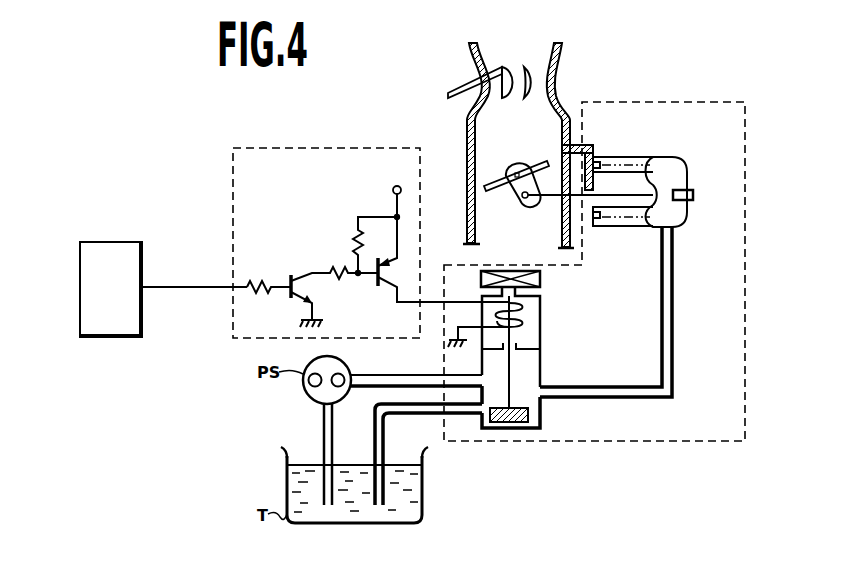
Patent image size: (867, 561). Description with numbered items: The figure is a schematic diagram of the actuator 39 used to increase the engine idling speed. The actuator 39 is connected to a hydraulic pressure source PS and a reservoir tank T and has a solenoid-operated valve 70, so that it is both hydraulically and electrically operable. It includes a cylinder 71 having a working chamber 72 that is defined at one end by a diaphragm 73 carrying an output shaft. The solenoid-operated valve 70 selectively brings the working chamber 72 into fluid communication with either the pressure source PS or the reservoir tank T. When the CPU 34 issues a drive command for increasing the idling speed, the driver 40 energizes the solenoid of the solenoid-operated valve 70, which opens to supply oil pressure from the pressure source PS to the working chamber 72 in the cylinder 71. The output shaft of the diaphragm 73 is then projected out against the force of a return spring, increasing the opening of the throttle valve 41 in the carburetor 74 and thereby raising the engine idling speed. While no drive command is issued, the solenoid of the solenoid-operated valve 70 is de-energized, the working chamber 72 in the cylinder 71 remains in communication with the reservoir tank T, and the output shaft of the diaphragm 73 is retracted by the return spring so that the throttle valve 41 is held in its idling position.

The CPU 34 is at (125, 337).
The actuator 39 is at (624, 449).
The driver 40 is at (350, 146).
The throttle valve 41 is at (502, 173).
The solenoid-operated valve 70 is at (540, 330).
The cylinder 71 is at (667, 156).
The working chamber 72 is at (678, 216).
The diaphragm 73 is at (653, 182).
The carburetor 74 is at (467, 162).